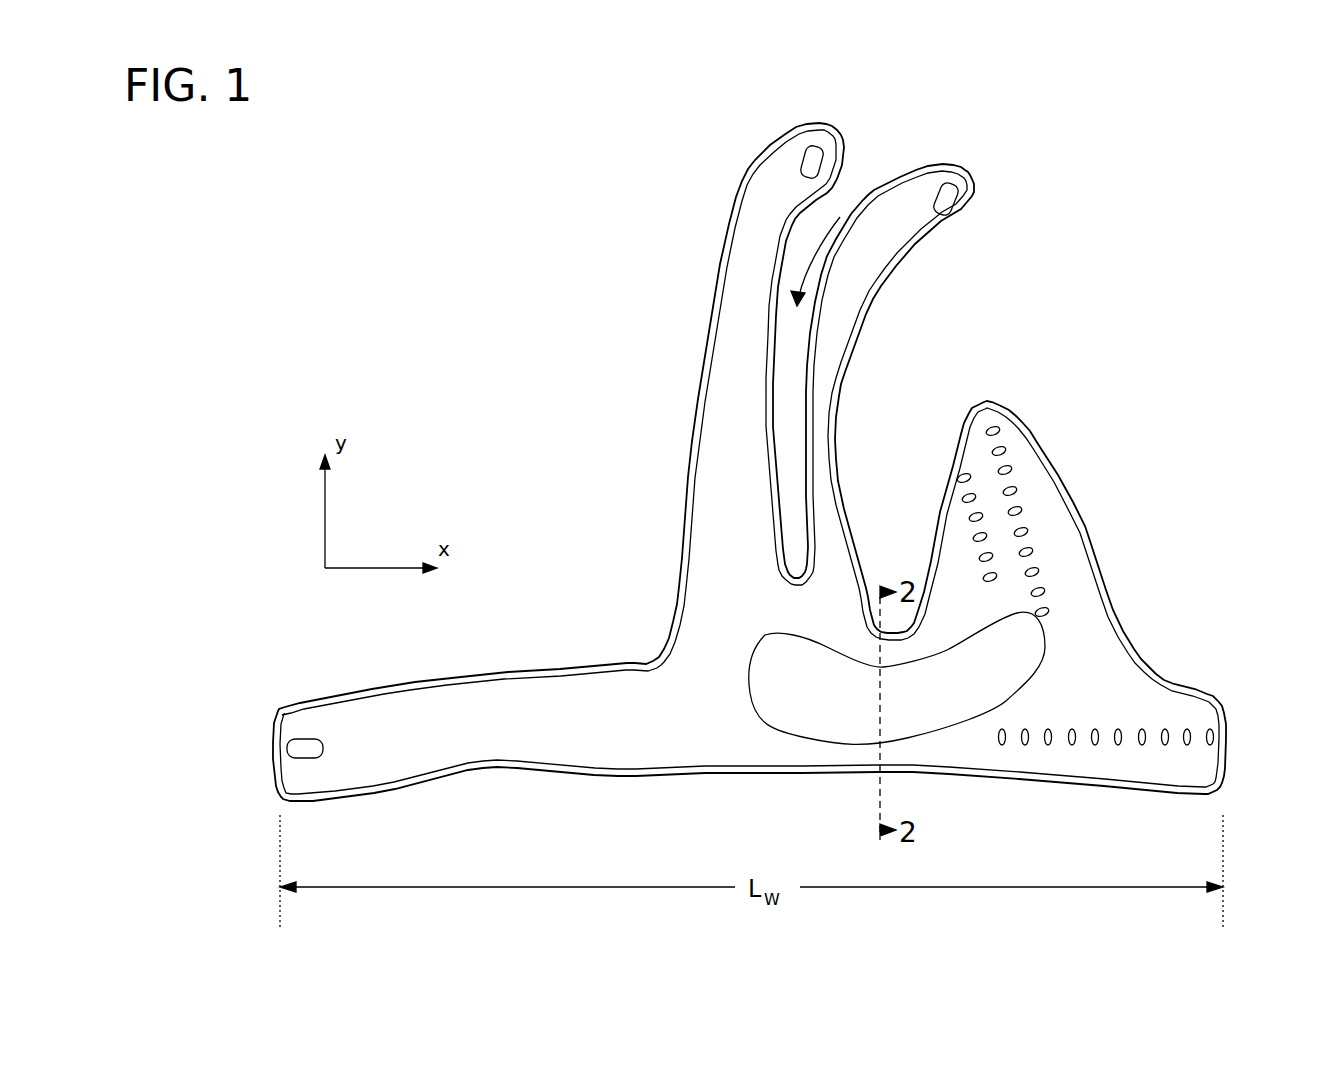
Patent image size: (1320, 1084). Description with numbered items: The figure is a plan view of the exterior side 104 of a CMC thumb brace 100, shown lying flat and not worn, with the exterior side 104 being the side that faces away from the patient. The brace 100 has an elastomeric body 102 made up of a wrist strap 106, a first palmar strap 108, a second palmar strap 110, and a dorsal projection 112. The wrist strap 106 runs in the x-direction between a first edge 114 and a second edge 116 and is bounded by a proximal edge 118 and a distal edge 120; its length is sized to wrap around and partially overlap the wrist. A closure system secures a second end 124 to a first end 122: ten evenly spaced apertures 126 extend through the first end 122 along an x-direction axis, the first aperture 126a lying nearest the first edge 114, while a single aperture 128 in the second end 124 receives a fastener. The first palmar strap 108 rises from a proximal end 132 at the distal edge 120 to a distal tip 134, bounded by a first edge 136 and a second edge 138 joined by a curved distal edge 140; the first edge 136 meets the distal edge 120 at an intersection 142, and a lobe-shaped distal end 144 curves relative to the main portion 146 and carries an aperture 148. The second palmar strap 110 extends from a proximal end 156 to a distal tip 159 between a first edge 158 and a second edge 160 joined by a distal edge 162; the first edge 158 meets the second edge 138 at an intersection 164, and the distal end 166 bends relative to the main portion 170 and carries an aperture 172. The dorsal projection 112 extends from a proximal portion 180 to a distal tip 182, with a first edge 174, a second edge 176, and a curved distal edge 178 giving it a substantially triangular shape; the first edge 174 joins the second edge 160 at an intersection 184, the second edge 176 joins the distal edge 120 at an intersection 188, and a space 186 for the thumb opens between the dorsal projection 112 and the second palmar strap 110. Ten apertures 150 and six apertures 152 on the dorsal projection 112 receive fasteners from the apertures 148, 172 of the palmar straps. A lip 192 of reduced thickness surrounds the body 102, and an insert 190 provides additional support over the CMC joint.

The CMC thumb brace 100 is at (380, 212).
The body 102 is at (640, 663).
The exterior side 104 is at (712, 580).
The wrist strap 106 is at (1120, 770).
The first palmar strap 108 is at (742, 373).
The second palmar strap 110 is at (830, 367).
The dorsal projection 112 is at (1043, 523).
The first edge 114 is at (1230, 740).
The second edge 116 is at (267, 760).
The proximal edge 118 is at (670, 778).
The distal edge 120 is at (497, 675).
The first end 122 is at (1087, 763).
The second end 124 is at (302, 777).
The apertures 126 is at (1118, 728).
The first aperture 126a is at (1210, 735).
The aperture 128 is at (303, 740).
The proximal end 132 is at (653, 710).
The distal tip 134 is at (830, 123).
The first edge 136 is at (690, 437).
The second edge 138 is at (780, 483).
The distal edge 140 is at (783, 138).
The intersection 142 is at (655, 665).
The distal end 144 is at (787, 200).
The main portion 146 is at (740, 317).
The aperture 148 is at (822, 158).
The apertures 150 is at (1021, 512).
The apertures 152 is at (983, 559).
The proximal end 156 is at (833, 617).
The first edge 158 is at (822, 290).
The distal tip 159 is at (962, 167).
The second edge 160 is at (840, 470).
The distal edge 162 is at (973, 180).
The intersection 164 is at (807, 577).
The distal end 166 is at (920, 197).
The main portion 170 is at (820, 417).
The aperture 172 is at (950, 200).
The first edge 174 is at (930, 540).
The second edge 176 is at (1017, 413).
The distal edge 178 is at (1000, 403).
The proximal portion 180 is at (1060, 633).
The distal tip 182 is at (980, 403).
The intersection 184 is at (917, 607).
The space 186 is at (919, 502).
The intersection 188 is at (1140, 660).
The insert 190 is at (853, 713).
The lip 192 is at (800, 773).